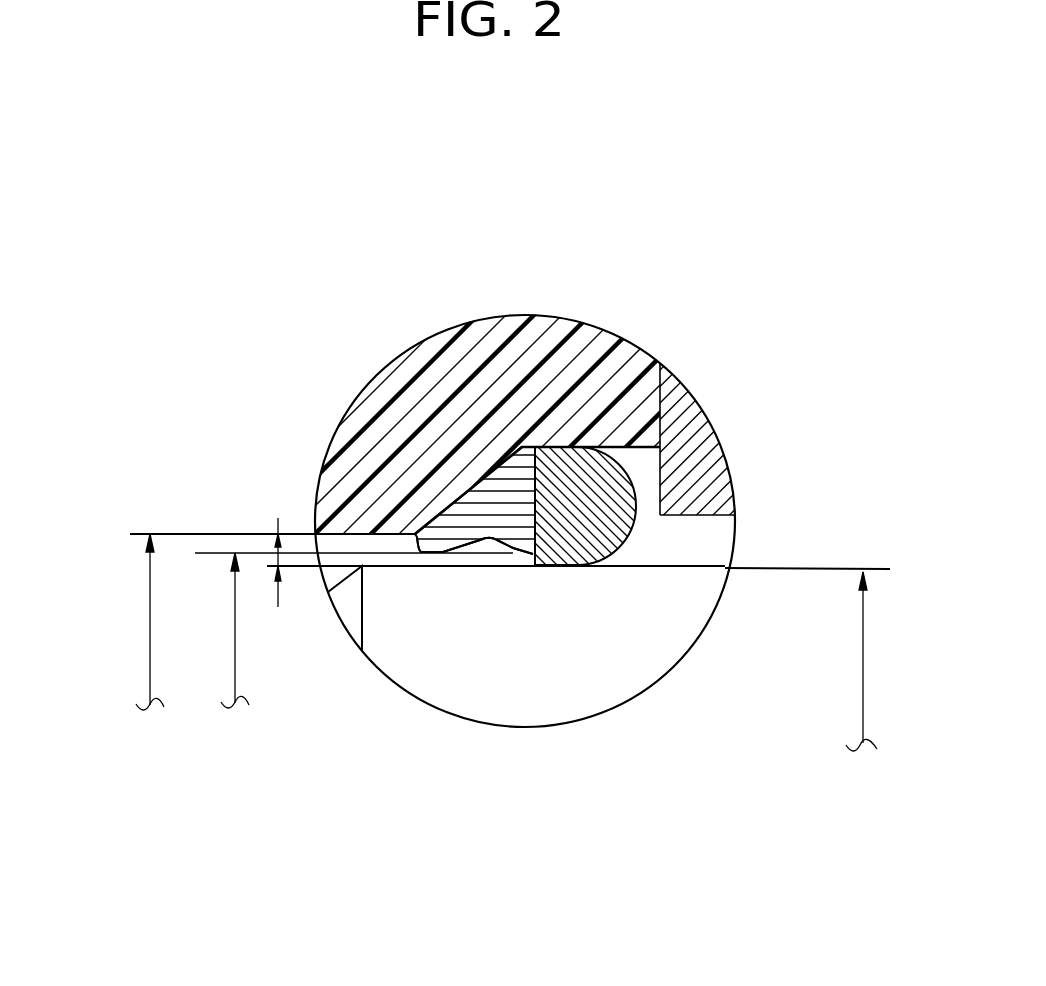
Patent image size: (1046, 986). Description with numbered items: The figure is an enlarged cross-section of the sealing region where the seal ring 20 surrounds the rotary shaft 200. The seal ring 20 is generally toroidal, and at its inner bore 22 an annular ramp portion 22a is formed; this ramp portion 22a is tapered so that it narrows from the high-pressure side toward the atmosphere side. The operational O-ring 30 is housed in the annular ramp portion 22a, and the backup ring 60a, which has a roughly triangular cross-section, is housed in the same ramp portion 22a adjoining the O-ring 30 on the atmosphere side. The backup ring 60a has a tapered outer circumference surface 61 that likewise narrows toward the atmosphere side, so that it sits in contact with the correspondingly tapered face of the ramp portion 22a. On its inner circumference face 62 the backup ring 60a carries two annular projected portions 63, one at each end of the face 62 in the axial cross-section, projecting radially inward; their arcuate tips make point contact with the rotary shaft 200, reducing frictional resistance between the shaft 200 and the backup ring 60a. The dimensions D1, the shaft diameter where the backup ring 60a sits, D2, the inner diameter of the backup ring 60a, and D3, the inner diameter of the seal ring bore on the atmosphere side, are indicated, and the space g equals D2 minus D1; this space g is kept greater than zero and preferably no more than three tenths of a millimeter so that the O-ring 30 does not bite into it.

The seal ring 20 is at (357, 457).
The inner bore 22 is at (347, 535).
The annular ramp portion 22a is at (480, 546).
The operational O-ring 30 is at (583, 473).
The backup ring 60a is at (505, 500).
The tapered outer circumference surface 61 is at (478, 538).
The inner circumference face 62 is at (492, 549).
The projected portion 63 is at (420, 553).
The rotary shaft 200 is at (693, 598).
The diameter of the rotary shaft D1 is at (863, 672).
The inner diameter of the backup ring D2 is at (235, 645).
The inner diameter of the seal ring bore D3 is at (150, 642).
The space g is at (278, 588).